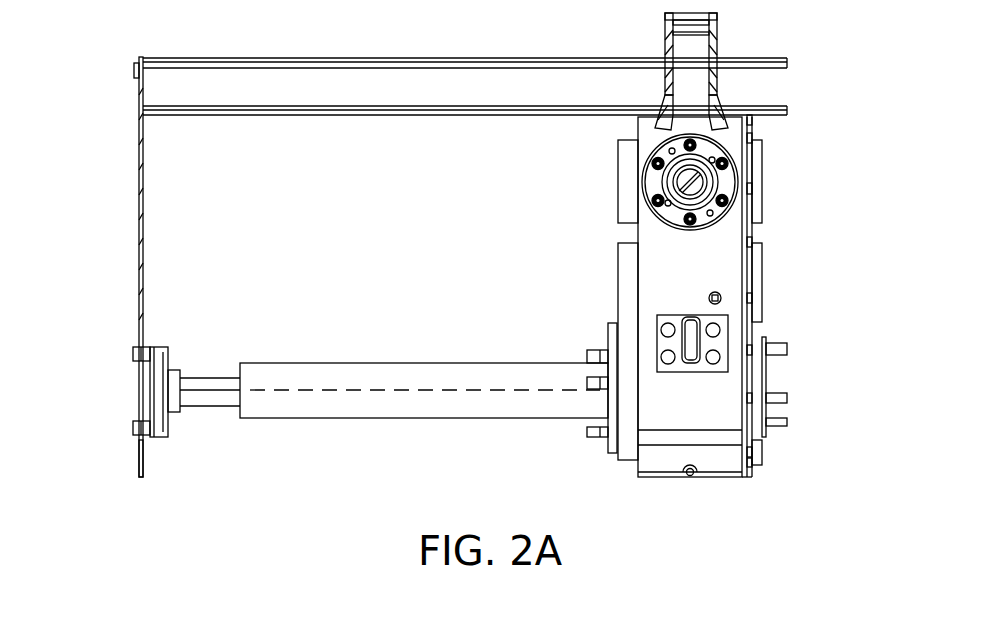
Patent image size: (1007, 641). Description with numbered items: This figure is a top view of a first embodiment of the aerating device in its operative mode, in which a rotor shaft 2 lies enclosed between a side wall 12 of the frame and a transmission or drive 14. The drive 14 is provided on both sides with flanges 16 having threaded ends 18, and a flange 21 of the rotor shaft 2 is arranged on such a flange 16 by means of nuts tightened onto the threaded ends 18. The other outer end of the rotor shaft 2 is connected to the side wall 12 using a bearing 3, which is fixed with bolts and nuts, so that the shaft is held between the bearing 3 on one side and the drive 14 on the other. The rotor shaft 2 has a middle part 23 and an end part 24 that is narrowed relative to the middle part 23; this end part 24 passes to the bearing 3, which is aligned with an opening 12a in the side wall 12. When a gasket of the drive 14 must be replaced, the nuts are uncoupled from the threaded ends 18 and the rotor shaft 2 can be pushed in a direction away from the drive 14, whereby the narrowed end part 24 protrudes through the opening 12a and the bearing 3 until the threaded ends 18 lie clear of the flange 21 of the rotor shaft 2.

The rotor shaft 2 is at (425, 258).
The bearing 3 is at (152, 347).
The side wall 12 is at (137, 216).
The opening 12a is at (137, 390).
The transmission 14 is at (722, 252).
The flange 16 is at (632, 447).
The threaded end 18 is at (780, 425).
The flange 21 is at (612, 447).
The middle part 23 is at (355, 375).
The end part 24 is at (225, 383).